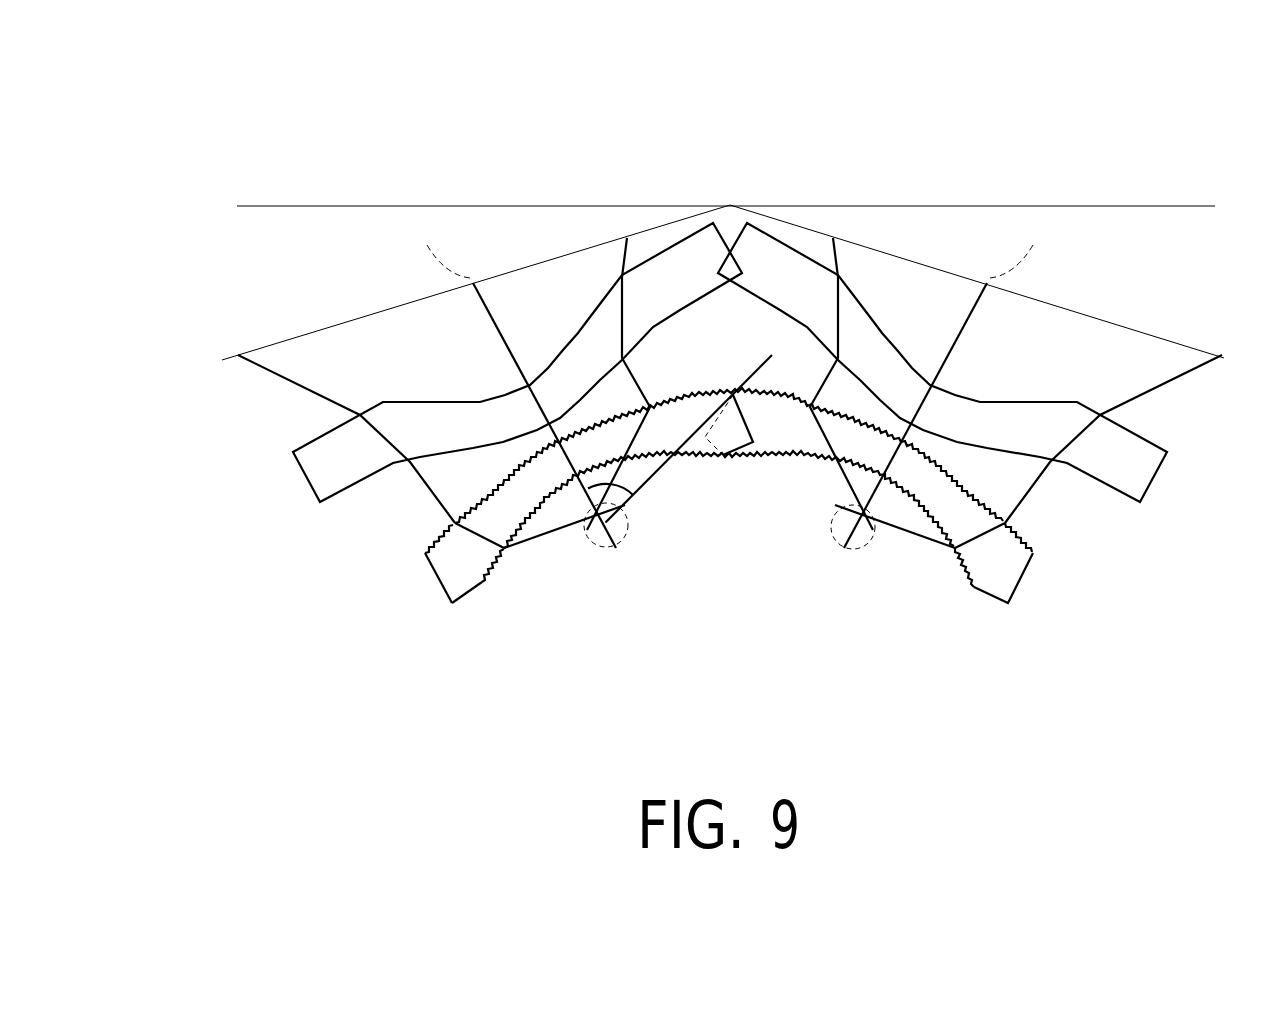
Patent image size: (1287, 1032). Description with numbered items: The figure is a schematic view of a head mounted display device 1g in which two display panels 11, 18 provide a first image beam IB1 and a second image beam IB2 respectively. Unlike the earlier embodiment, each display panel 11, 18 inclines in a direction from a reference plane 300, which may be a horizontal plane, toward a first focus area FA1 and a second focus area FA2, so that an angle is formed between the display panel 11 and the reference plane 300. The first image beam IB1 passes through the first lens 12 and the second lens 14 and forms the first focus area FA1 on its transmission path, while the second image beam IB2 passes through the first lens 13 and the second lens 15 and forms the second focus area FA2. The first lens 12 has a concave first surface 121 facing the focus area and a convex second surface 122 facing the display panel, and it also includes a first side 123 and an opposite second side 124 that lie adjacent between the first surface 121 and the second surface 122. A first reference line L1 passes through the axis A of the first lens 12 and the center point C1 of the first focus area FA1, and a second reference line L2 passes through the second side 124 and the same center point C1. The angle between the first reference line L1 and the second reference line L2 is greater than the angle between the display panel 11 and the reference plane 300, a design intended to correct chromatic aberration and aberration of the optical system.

The reference plane 300 is at (291, 205).
The head mounted display device 1g is at (1217, 170).
The display panel 11 is at (270, 345).
The display panel 18 is at (1192, 345).
The axis A is at (728, 249).
The second lens 14 is at (318, 468).
The second lens 15 is at (1140, 468).
The first image beam IB1 is at (310, 391).
The second image beam IB2 is at (1150, 391).
The first reference line L1 is at (517, 367).
The second reference line L2 is at (660, 475).
The first lens 12 is at (619, 544).
The first surface 121 is at (474, 598).
The second surface 122 is at (428, 549).
The first side 123 is at (437, 581).
The second side 124 is at (748, 418).
The first lens 13 is at (1000, 568).
The center point C1 is at (603, 538).
The first focus area FA1 is at (590, 547).
The second focus area FA2 is at (858, 549).